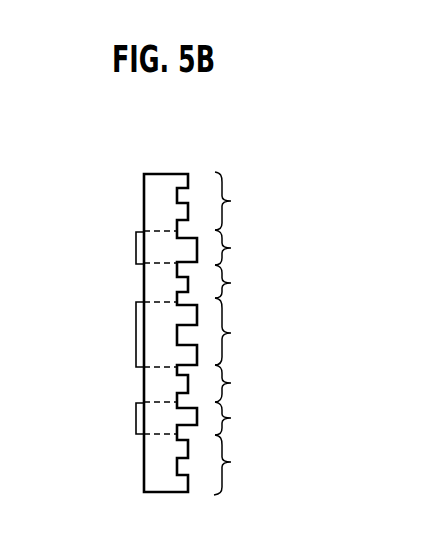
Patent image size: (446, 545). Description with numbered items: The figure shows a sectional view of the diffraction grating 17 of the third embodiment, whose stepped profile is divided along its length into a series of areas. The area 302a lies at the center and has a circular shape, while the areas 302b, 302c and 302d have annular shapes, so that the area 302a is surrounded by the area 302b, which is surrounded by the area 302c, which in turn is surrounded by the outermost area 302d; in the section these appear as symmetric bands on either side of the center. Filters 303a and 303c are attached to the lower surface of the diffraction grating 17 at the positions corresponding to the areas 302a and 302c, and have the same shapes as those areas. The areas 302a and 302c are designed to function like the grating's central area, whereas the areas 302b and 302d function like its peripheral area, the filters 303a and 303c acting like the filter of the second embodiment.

The diffraction grating 17 is at (204, 150).
The area 302a is at (253, 331).
The area 302b is at (253, 333).
The area 302c is at (253, 332).
The area 302d is at (253, 333).
The filter 303a is at (136, 340).
The filter 303c is at (136, 250).